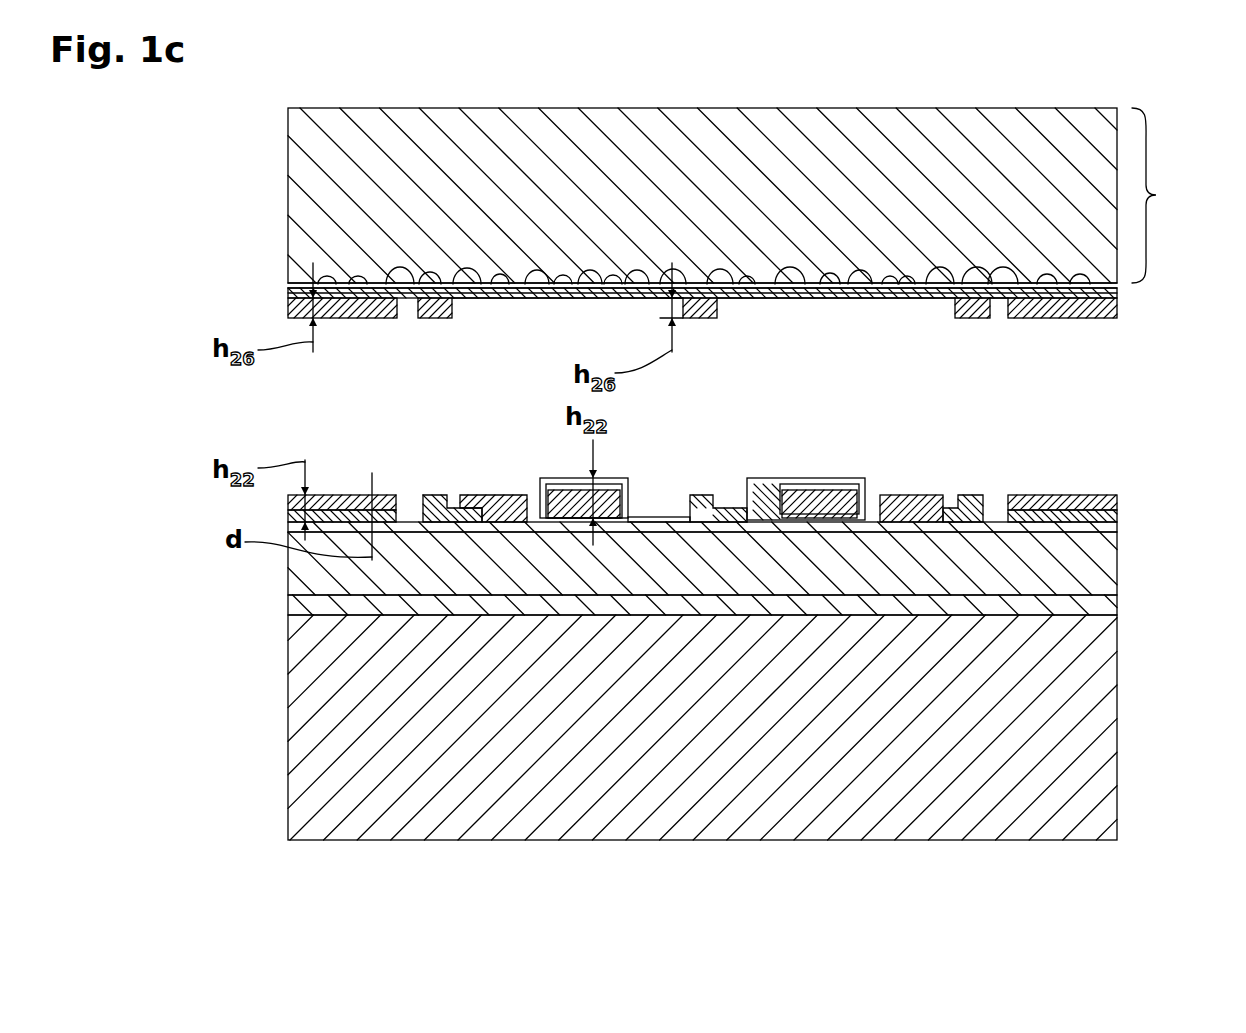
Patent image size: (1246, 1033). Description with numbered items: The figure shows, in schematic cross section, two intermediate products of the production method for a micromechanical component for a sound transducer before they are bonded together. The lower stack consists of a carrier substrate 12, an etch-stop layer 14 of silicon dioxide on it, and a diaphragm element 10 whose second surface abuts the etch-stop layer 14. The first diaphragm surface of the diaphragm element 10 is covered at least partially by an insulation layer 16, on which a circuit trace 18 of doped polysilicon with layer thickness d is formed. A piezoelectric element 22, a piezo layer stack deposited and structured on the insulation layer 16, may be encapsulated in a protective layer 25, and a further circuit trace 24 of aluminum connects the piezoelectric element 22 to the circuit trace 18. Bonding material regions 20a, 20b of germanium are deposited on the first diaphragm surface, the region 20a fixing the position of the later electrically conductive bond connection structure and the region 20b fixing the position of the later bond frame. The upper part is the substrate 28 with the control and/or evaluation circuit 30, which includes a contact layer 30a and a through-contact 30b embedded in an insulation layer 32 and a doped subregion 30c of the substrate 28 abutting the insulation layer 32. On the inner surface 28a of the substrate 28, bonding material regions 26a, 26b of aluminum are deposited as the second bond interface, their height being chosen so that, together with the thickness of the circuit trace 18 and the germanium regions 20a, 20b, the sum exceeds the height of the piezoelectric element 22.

The diaphragm element 10 is at (292, 565).
The carrier substrate 12 is at (1100, 750).
The etch-stop layer 14 is at (292, 605).
The insulation layer 16 is at (662, 517).
The circuit trace 18 is at (1117, 527).
The bonding material region of germanium 20a is at (438, 495).
The further bonding material region of germanium 20b is at (372, 495).
The piezoelectric element 22 is at (553, 478).
The further circuit trace 24 is at (494, 495).
The protective layer 25 is at (612, 490).
The bonding material region of aluminum 26a is at (436, 318).
The further bonding material region of aluminum 26b is at (292, 312).
The substrate 28 is at (741, 195).
The inner surface of substrate 28a is at (998, 318).
The control and/or evaluation circuit 30 is at (547, 283).
The contact layer 30a is at (516, 300).
The through-contact 30b is at (905, 298).
The doped subregion 30c is at (985, 280).
The insulation layer 32 is at (292, 288).